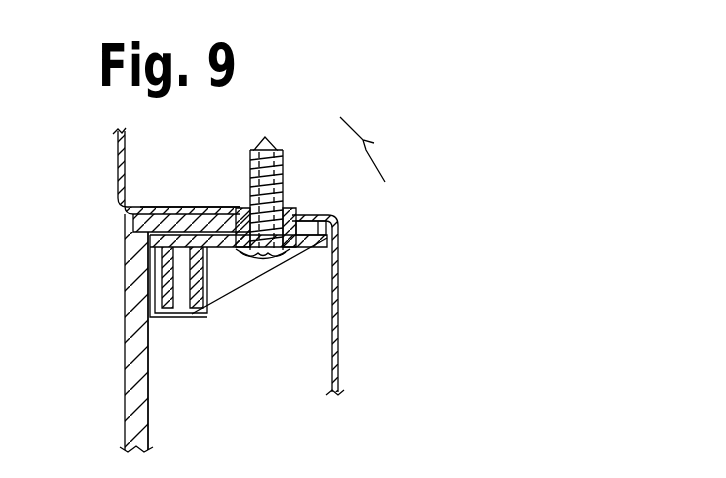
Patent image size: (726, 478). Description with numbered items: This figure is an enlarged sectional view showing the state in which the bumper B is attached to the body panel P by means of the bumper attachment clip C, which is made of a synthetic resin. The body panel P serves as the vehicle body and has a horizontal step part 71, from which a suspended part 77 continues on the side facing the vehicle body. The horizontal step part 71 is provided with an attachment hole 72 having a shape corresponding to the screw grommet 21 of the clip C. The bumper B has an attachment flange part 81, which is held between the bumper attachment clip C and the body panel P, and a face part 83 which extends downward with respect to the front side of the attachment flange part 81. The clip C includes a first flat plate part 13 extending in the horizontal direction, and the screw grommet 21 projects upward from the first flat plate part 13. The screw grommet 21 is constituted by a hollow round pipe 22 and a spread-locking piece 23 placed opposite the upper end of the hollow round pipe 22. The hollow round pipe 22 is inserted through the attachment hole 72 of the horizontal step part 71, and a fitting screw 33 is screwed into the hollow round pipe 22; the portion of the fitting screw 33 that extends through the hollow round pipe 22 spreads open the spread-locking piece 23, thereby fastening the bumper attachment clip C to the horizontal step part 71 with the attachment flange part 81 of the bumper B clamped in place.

The body panel P is at (116, 172).
The bumper B is at (112, 395).
The bumper attachment clip C is at (207, 313).
The first flat plate part 13 is at (217, 260).
The screw grommet 21 is at (374, 149).
The hollow round pipe 22 is at (303, 222).
The spread-locking piece 23 is at (283, 178).
The fitting screw 33 is at (272, 258).
The horizontal step part 71 is at (168, 207).
The attachment hole 72 is at (238, 208).
The suspended part 77 is at (339, 357).
The attachment flange part 81 is at (177, 227).
The face part 83 is at (138, 323).